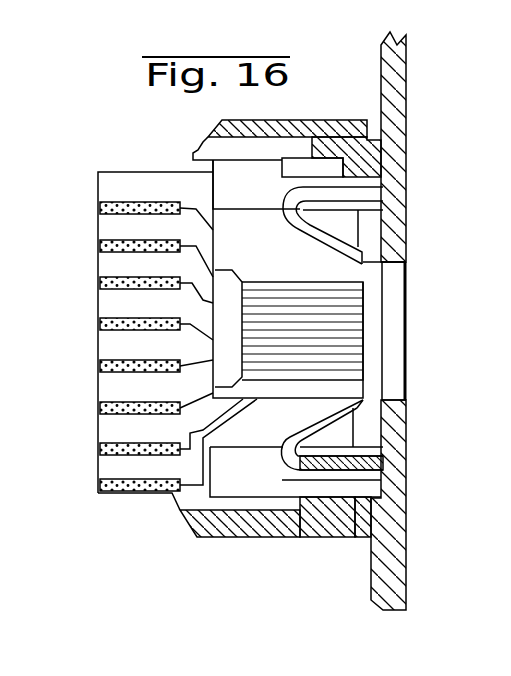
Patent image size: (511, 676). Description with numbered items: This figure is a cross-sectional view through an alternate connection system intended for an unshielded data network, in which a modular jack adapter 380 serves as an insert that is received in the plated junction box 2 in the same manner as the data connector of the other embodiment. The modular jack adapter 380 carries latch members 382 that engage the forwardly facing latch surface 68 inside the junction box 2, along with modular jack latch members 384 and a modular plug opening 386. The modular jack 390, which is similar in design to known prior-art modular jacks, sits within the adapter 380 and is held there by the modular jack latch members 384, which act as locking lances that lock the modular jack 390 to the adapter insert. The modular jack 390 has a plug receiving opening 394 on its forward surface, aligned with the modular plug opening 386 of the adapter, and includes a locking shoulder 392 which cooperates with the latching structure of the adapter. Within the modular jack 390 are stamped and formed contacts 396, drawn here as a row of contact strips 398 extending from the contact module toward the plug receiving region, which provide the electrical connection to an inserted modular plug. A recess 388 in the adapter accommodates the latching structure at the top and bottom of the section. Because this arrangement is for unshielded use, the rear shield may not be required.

The junction box 2 is at (273, 323).
The latch surface 68 is at (315, 118).
The modular jack adapter 380 is at (400, 189).
The latch members 382 is at (298, 158).
The modular jack latch members 384 is at (310, 233).
The modular plug opening 386 is at (396, 398).
The recess 388 is at (283, 152).
The modular jack 390 is at (350, 322).
The locking shoulder 392 is at (403, 244).
The plug receiving opening 394 is at (408, 353).
The stamped and formed contact 396 is at (128, 178).
The contact strips 398 is at (98, 279).